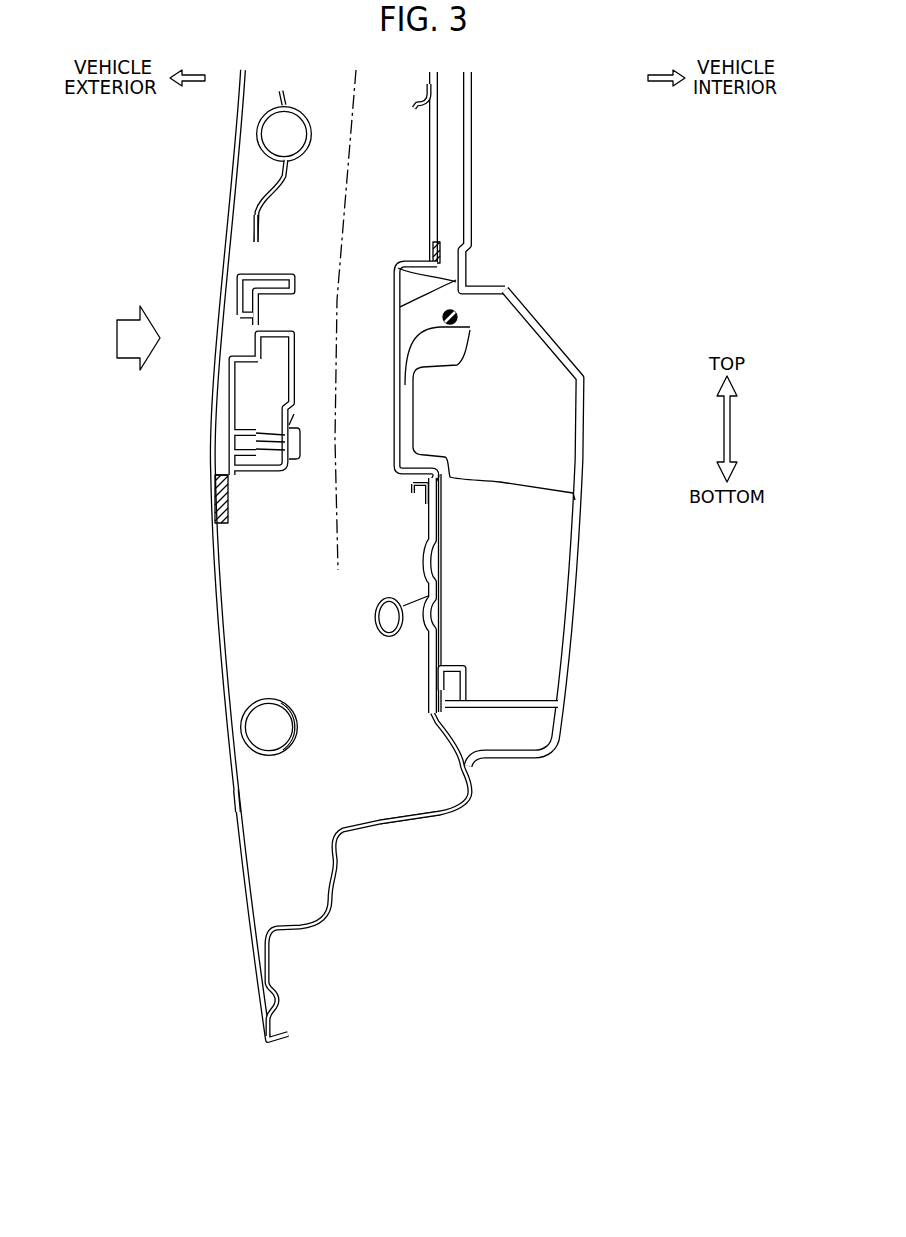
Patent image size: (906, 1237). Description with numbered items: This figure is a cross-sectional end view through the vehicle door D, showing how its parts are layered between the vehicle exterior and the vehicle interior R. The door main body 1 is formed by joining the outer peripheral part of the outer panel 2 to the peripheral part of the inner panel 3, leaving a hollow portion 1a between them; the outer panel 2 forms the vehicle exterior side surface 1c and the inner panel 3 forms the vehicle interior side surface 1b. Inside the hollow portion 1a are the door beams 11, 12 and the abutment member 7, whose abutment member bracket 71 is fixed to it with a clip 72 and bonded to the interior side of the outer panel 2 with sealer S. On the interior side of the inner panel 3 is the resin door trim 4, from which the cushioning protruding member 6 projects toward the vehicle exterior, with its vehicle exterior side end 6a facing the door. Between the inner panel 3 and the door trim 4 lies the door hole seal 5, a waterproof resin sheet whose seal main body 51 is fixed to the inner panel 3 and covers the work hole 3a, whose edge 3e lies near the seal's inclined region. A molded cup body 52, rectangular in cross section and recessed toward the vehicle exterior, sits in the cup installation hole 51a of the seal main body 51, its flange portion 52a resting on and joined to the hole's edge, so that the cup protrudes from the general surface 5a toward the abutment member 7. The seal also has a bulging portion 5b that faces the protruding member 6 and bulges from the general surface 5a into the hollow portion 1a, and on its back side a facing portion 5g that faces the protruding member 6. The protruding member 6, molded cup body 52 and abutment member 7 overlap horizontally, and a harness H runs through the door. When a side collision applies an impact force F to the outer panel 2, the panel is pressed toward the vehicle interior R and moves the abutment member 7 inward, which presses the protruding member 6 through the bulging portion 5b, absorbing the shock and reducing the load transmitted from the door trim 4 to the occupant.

The door main body 1 is at (323, 555).
The hollow portion 1a is at (384, 785).
The vehicle interior side surface 1b is at (437, 577).
The vehicle exterior side surface 1c is at (237, 803).
The outer panel 2 is at (225, 771).
The inner panel 3 is at (352, 871).
The work hole 3a is at (492, 395).
The edge of the work hole 3e is at (438, 82).
The door trim 4 is at (563, 690).
The door hole seal 5 is at (500, 413).
The general surface 5a is at (438, 185).
The bulging portion 5b is at (418, 258).
The facing portion 5g is at (395, 437).
The protruding member 6 is at (518, 512).
The vehicle exterior side end 6a is at (470, 327).
The abutment member 7 is at (229, 392).
The door beam 11 is at (268, 148).
The door beam 12 is at (253, 705).
The seal main body 51 is at (438, 213).
The cup installation hole 51a is at (397, 266).
The molded cup body 52 is at (466, 276).
The flange portion 52a is at (458, 253).
The abutment member bracket 71 is at (255, 236).
The clip 72 is at (292, 457).
The door D is at (174, 184).
The impact force F is at (132, 319).
The vehicle interior R is at (629, 150).
The sealer S is at (219, 469).
The harness H is at (458, 306).